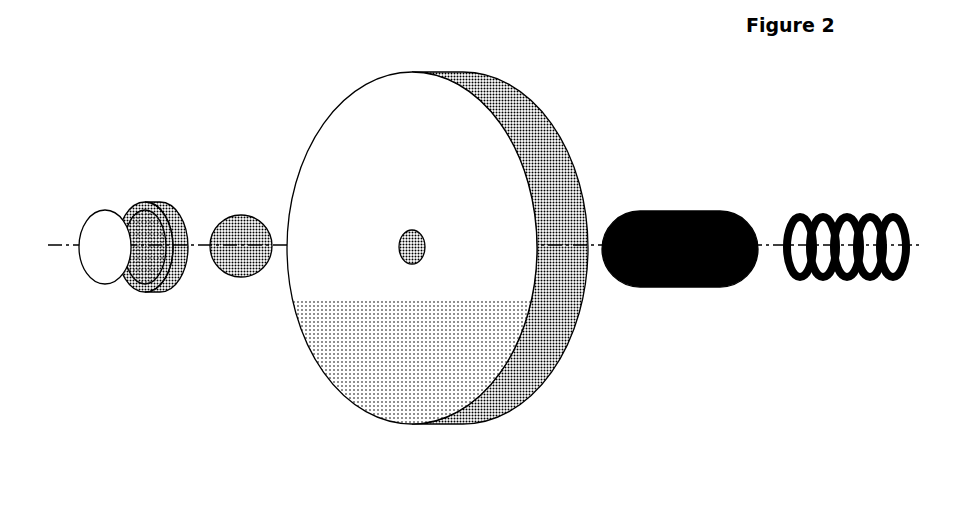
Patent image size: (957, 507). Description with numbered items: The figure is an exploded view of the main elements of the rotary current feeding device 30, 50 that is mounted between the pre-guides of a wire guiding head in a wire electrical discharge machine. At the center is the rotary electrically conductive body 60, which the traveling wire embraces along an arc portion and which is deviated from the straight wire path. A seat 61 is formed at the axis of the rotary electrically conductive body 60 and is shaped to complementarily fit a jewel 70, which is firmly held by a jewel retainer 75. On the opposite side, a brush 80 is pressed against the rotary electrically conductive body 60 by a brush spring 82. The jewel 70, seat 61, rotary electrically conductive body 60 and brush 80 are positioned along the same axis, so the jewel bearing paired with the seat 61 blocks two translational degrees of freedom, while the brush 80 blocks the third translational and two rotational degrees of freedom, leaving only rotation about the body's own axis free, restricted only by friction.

The drive mechanism / assembly 30, 50 is at (250, 396).
The rotary electrically conductive body 60 is at (312, 192).
The seat 61 is at (402, 258).
The jewel 70 is at (230, 232).
The jewel retainer 75 is at (107, 230).
The brush 80 is at (673, 285).
The brush spring 82 is at (885, 275).